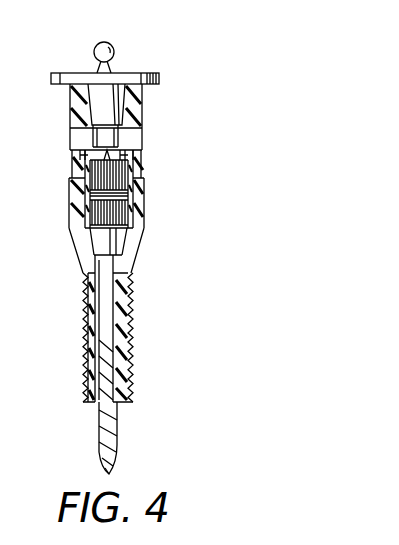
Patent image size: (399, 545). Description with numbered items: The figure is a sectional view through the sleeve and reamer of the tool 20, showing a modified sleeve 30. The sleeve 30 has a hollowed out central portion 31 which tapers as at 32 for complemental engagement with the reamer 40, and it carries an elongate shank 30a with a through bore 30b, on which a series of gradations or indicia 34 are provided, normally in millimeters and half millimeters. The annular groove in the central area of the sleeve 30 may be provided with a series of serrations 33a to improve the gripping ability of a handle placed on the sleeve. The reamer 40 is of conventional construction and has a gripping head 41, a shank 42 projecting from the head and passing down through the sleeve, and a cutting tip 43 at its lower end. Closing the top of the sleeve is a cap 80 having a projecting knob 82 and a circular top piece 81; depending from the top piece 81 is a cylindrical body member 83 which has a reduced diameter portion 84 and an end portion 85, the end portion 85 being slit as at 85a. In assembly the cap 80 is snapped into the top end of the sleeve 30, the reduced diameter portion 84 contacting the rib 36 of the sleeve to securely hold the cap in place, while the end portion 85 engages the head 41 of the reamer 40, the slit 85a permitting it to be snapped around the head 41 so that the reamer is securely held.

The fastener assembly 20 is at (52, 4).
The sleeve 30 is at (142, 106).
The elongate shank 30a is at (127, 363).
The through bore 30b is at (106, 327).
The hollowed out central portion 31 is at (140, 143).
The taper 32 is at (128, 257).
The serrations 33a is at (140, 175).
The gradations or indicia 34 is at (132, 328).
The rib 36 is at (100, 153).
The reamer 40 is at (118, 452).
The gripping head 41 is at (134, 168).
The shank 42 is at (107, 293).
The cutting tip 43 is at (108, 474).
The cap 80 is at (140, 72).
The circular top piece 81 is at (160, 80).
The projecting knob 82 is at (101, 42).
The cylindrical body member 83 is at (95, 108).
The reduced diameter portion 84 is at (100, 133).
The end portion 85 is at (78, 163).
The slit 85a is at (118, 163).